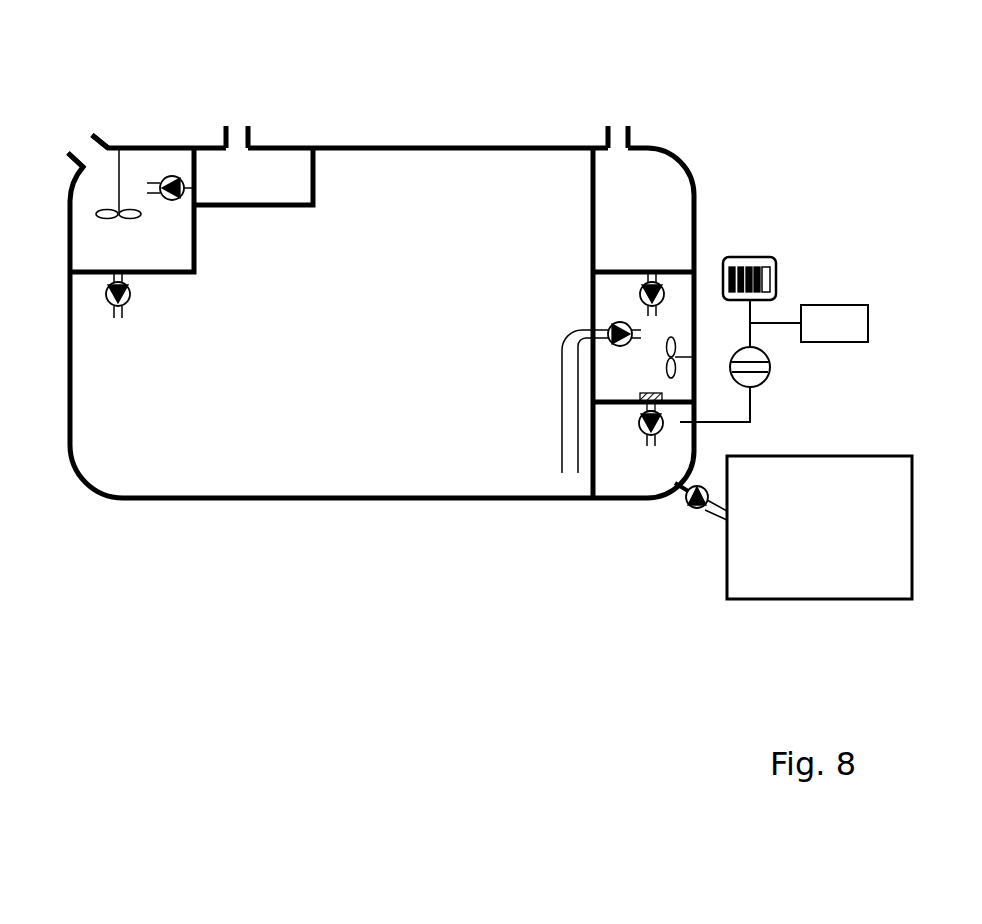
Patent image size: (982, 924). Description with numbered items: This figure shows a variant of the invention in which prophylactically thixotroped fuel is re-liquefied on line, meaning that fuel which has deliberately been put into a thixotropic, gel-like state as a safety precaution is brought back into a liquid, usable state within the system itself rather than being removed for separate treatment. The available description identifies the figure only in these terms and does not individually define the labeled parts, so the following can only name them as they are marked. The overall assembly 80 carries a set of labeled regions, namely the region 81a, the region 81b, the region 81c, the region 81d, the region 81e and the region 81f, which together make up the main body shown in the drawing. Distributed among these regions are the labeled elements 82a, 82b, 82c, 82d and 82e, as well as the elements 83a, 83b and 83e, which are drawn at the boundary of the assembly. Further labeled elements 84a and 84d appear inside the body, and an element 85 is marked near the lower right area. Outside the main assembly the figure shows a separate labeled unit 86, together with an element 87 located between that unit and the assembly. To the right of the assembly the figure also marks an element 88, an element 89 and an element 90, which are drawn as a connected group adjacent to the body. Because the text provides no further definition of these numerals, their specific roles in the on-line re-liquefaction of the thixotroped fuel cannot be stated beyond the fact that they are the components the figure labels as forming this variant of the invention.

The tank 80 is at (178, 500).
The first compartment 81a is at (107, 247).
The second compartment 81b is at (285, 172).
The main compartment 81c is at (340, 460).
The fourth compartment 81d is at (610, 290).
The fifth compartment 81e is at (648, 172).
The sixth compartment 81f is at (627, 483).
The pump 82a is at (183, 178).
The pump 82b is at (105, 300).
The pump with pipe 82c is at (572, 340).
The pump 82d is at (667, 292).
The pump 82e is at (637, 438).
The inlet 83a is at (106, 132).
The inlet 83b is at (237, 120).
The inlet 83e is at (618, 124).
The stirrer 84a is at (97, 213).
The fan / agitator 84d is at (677, 335).
The filter 85 is at (637, 377).
The external unit 86 is at (772, 577).
The pump 87 is at (692, 512).
The control unit 88 is at (838, 327).
The sensor 89 is at (748, 410).
The display 90 is at (778, 272).